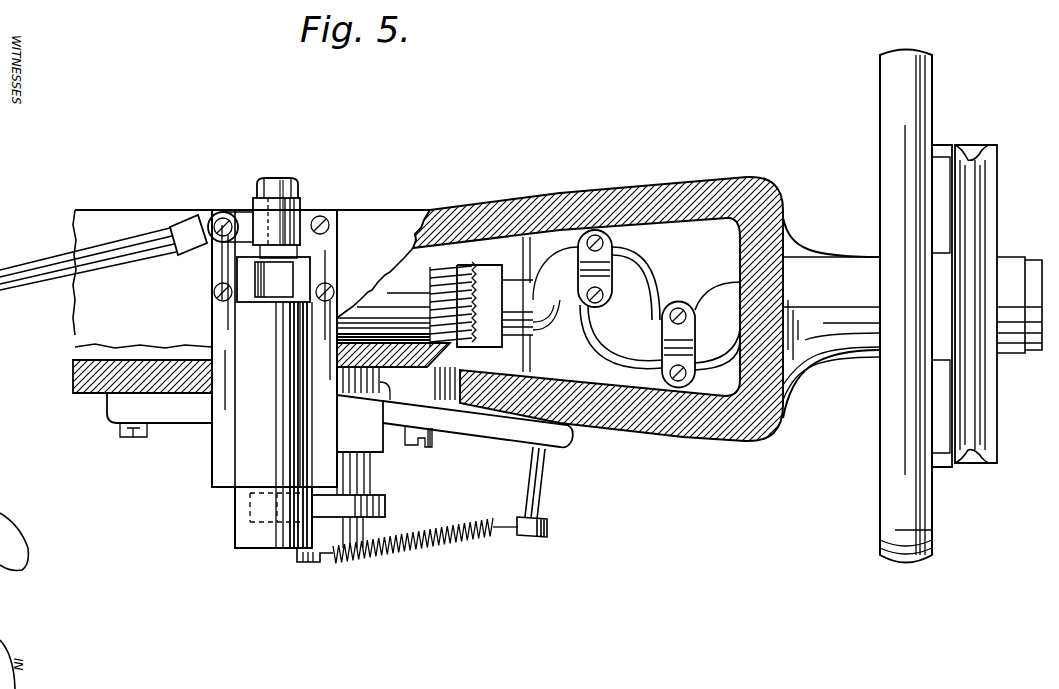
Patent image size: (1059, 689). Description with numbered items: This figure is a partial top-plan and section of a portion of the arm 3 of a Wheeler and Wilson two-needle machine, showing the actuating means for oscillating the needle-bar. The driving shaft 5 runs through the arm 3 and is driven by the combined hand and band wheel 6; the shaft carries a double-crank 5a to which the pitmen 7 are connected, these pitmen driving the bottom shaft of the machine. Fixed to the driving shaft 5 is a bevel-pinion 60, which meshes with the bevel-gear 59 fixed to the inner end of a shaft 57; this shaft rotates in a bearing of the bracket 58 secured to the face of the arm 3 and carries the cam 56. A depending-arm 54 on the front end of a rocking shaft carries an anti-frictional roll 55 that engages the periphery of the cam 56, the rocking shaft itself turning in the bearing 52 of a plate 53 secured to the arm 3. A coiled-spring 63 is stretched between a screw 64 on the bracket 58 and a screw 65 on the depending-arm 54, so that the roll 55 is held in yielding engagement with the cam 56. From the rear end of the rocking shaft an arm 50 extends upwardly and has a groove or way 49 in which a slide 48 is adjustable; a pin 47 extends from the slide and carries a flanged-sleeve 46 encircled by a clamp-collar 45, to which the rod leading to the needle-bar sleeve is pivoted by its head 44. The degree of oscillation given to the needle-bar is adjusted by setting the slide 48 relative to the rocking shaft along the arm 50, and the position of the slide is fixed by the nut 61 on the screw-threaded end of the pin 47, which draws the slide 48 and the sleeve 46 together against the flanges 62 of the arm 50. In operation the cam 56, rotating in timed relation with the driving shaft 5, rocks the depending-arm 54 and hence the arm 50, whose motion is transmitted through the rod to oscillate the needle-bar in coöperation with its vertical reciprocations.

The arm 3 is at (108, 215).
The driving shaft 5 is at (387, 292).
The double-crank 5a is at (643, 283).
The combined hand and band wheel 6 is at (888, 107).
The pitmen 7 is at (668, 346).
The head 44 is at (183, 220).
The clamp-collar 45 is at (250, 217).
The flanged-sleeve 46 is at (300, 205).
The pin 47 is at (270, 176).
The slide 48 is at (278, 275).
The groove or way 49 is at (257, 274).
The arm 50 is at (282, 305).
The bearing 52 is at (243, 433).
The plate 53 is at (219, 317).
The depending-arm 54 is at (242, 538).
The anti-frictional roll 55 is at (250, 507).
The cam 56 is at (353, 505).
The shaft 57 is at (410, 417).
The bracket 58 is at (378, 446).
The bevel-gear 59 is at (347, 353).
The bevel-pinion 60 is at (492, 273).
The nut 61 is at (290, 192).
The flanges 62 is at (255, 261).
The coiled-spring 63 is at (437, 550).
The screw 64 is at (543, 504).
The screw 65 is at (294, 563).